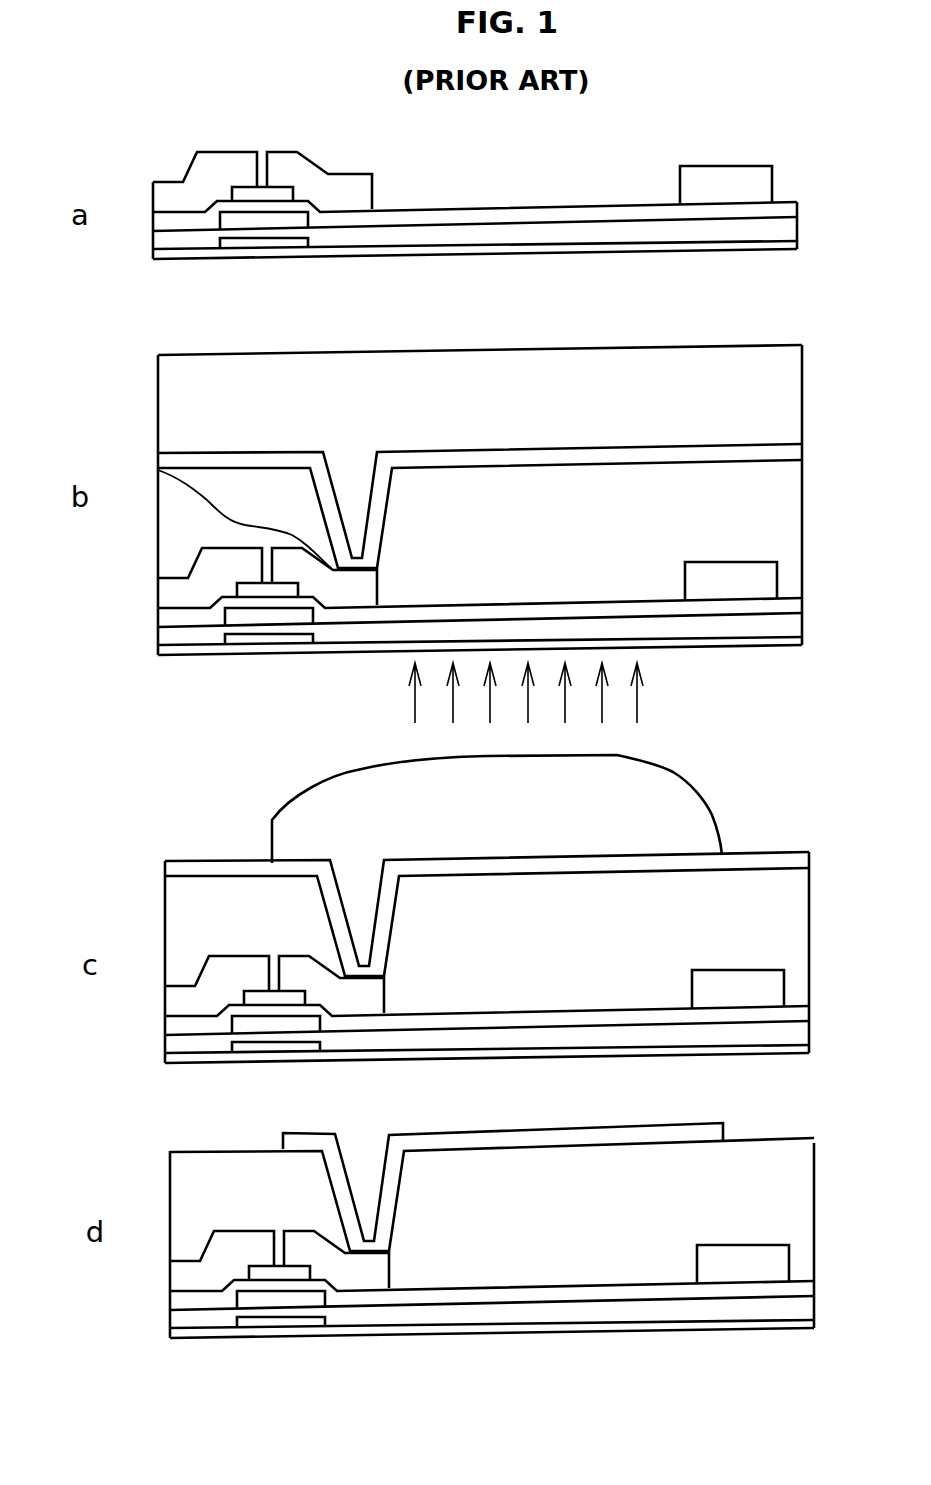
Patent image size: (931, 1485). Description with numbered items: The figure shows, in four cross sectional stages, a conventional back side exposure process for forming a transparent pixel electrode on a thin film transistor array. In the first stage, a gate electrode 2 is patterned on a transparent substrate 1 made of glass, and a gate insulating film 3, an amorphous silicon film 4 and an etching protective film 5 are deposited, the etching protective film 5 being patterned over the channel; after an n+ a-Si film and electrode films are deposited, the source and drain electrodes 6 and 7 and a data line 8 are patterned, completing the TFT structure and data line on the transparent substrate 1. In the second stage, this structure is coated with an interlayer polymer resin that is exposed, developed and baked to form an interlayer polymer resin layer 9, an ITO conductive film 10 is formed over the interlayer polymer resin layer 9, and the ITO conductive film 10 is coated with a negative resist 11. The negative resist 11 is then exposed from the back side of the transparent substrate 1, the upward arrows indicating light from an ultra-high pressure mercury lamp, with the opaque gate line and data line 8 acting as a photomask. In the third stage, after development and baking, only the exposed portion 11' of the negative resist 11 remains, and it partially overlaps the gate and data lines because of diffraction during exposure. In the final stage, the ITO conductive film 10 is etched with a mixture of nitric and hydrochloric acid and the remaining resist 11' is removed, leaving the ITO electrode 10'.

The transparent substrate 1 is at (755, 642).
The gate electrode 2 is at (275, 643).
The gate insulating film 3 is at (635, 632).
The amorphous silicon film 4 is at (532, 607).
The etching protective film 5 is at (252, 595).
The source electrode 6 is at (180, 568).
The drain electrode 7 is at (160, 470).
The data line 8 is at (760, 580).
The interlayer polymer resin layer 9 is at (435, 513).
The ITO conductive film 10 is at (480, 430).
The negative resist 11 is at (480, 478).
The exposed portion 11' is at (536, 806).
The ITO electrode 10' is at (495, 1164).